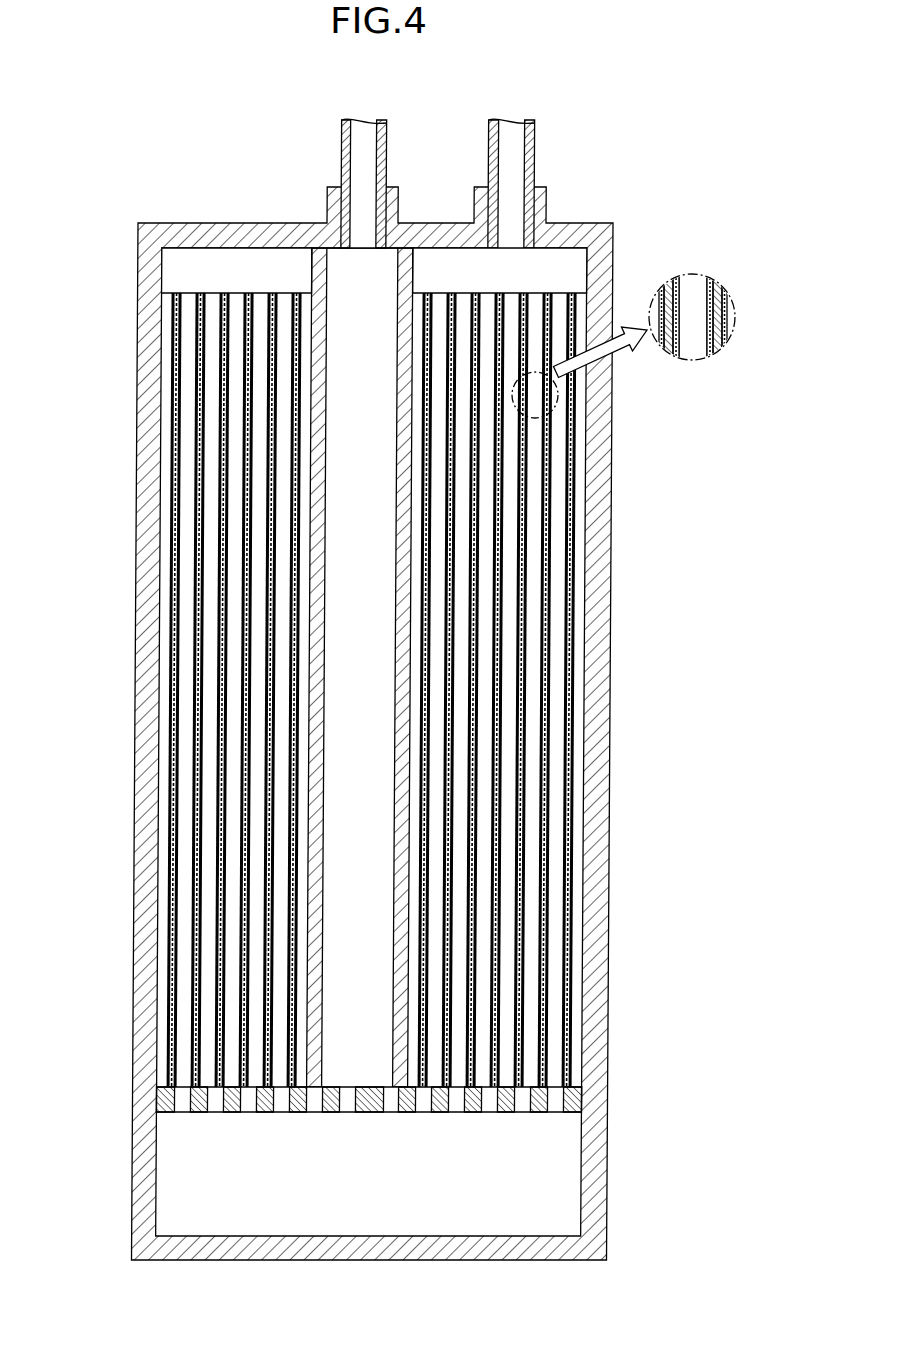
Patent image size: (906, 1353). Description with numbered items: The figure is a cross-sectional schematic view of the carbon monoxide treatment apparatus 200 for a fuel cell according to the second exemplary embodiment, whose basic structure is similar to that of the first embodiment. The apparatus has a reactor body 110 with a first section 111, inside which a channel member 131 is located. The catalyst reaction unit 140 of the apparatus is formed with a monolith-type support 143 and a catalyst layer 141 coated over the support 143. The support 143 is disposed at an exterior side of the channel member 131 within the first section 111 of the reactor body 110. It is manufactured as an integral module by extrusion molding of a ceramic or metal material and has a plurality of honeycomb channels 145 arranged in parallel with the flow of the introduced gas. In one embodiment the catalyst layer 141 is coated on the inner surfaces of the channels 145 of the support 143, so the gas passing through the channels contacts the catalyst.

The carbon monoxide treatment apparatus 200 is at (381, 96).
The reactor body 110 is at (134, 834).
The first section 111 is at (180, 268).
The channel member 131 is at (308, 636).
The catalyst reaction unit 140 is at (578, 744).
The catalyst layer 141 is at (728, 298).
The monolith-type support 143 is at (720, 328).
The honeycomb channels 145 is at (690, 288).